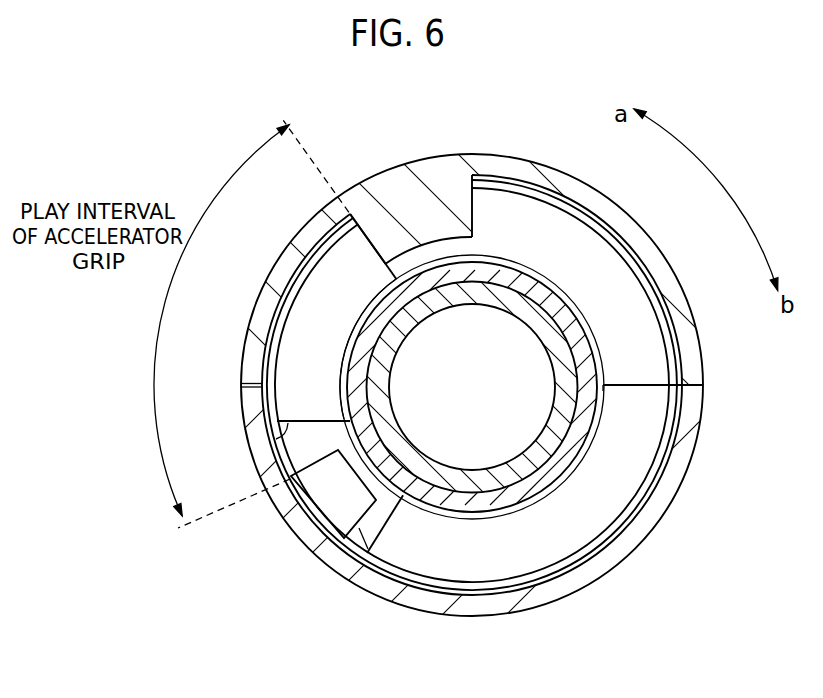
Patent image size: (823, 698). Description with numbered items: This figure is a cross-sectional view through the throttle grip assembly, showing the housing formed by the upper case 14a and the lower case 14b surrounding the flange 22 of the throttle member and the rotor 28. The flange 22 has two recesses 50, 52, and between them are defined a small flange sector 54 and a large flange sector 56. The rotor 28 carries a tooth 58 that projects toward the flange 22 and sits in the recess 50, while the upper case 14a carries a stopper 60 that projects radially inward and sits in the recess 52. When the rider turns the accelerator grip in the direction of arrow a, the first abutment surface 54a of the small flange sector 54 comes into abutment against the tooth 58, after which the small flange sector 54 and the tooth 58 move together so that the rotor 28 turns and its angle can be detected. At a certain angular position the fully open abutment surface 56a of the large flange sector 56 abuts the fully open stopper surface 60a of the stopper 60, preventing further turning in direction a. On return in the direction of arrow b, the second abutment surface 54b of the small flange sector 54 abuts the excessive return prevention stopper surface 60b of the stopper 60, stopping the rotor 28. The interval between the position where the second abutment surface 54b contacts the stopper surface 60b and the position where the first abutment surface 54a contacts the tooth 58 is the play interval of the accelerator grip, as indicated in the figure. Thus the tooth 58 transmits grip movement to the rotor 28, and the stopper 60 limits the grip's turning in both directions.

The upper case 14a is at (515, 163).
The lower case 14b is at (542, 594).
The flange 22 is at (441, 420).
The rotor 28 is at (297, 452).
The recess 50 is at (342, 425).
The recess 52 is at (532, 268).
The small flange sector 54 is at (320, 285).
The first abutment surface 54a is at (241, 439).
The second abutment surface 54b is at (349, 216).
The large flange sector 56 is at (584, 534).
The fully open abutment surface 56a is at (653, 388).
The tooth 58 is at (327, 499).
The stopper 60 is at (422, 230).
The fully open stopper surface 60a is at (470, 174).
The excessive return prevention stopper surface 60b is at (330, 250).